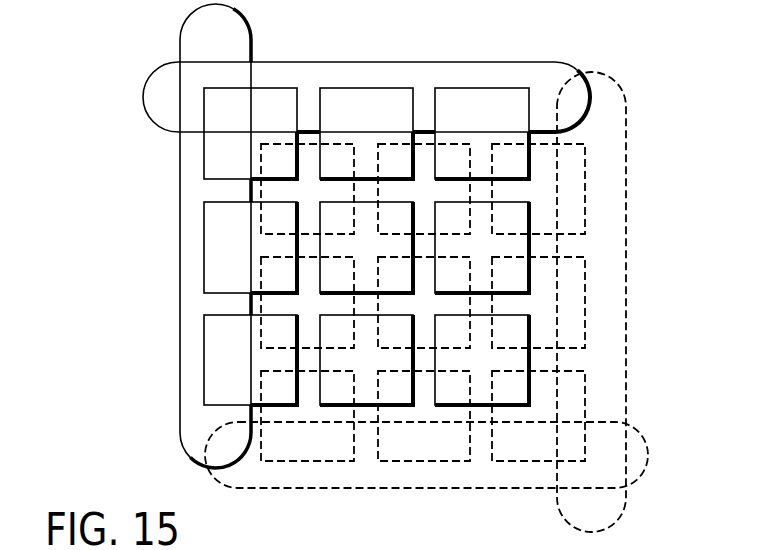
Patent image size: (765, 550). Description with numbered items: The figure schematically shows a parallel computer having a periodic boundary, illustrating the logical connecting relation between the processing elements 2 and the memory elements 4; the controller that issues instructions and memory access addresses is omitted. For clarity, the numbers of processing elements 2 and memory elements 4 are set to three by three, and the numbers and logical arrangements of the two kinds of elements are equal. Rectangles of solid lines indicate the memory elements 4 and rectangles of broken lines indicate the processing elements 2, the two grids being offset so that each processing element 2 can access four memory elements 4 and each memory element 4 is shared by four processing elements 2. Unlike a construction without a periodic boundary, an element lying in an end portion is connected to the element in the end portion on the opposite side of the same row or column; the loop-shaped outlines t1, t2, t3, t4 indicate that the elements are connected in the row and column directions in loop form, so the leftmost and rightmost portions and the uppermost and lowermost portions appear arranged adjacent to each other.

The processing element 2 is at (479, 88).
The memory element 4 is at (586, 202).
The loop connection indicator t1 is at (627, 278).
The loop connection indicator t2 is at (650, 452).
The loop connection indicator t3 is at (180, 192).
The loop connection indicator t4 is at (304, 62).